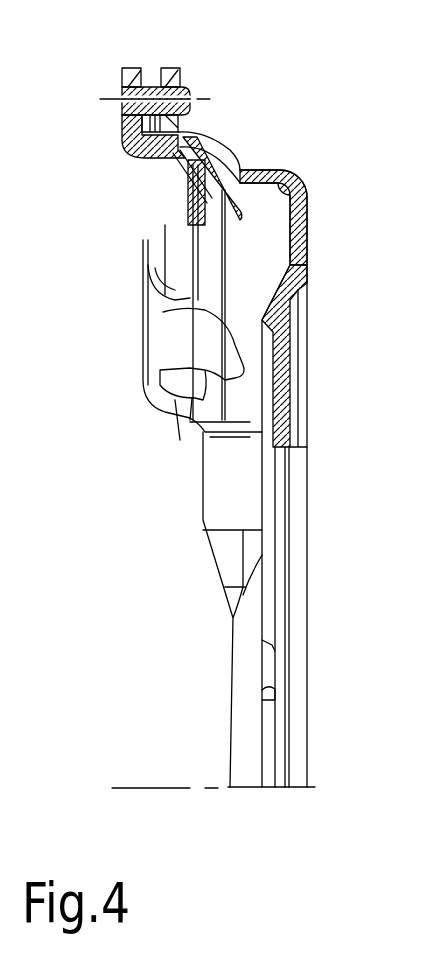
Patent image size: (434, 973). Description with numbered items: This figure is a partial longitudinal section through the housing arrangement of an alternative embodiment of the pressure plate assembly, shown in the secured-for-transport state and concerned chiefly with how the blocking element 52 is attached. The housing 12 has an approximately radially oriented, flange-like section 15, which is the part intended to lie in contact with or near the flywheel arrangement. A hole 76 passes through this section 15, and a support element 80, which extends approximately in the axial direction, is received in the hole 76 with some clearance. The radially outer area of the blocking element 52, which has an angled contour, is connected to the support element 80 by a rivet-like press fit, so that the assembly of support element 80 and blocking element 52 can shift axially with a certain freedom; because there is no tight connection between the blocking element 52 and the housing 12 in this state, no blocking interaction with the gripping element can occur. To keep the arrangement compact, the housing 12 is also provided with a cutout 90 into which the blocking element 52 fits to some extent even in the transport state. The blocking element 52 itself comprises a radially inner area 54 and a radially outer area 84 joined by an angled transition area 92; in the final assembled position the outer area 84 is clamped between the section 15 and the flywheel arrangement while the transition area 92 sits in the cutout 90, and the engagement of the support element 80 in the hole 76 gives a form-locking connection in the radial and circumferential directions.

The housing 12 is at (305, 233).
The radially oriented section 15 is at (183, 75).
The blocking element 52 is at (135, 142).
The radially inner area 54 is at (190, 215).
The hole 76 is at (163, 130).
The support element 80 is at (152, 95).
The radially outer area 84 is at (128, 78).
The cutout 90 is at (218, 153).
The transition area 92 is at (178, 158).